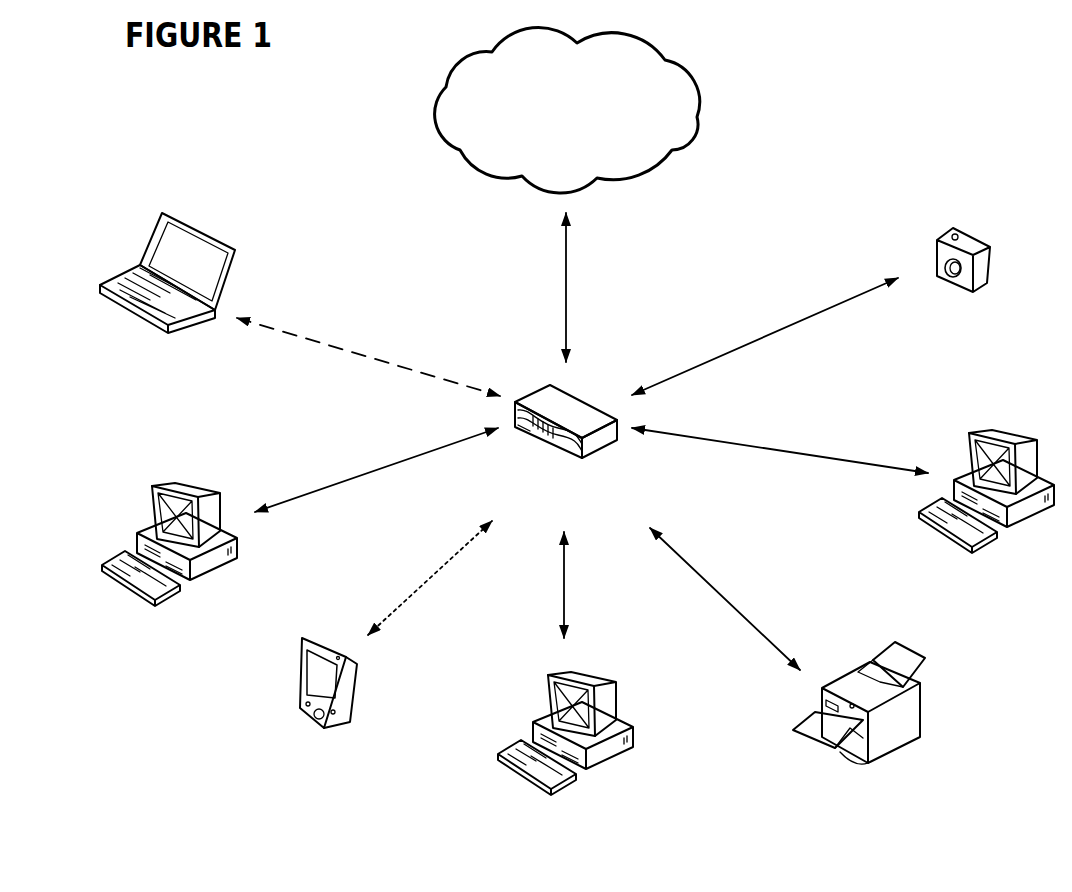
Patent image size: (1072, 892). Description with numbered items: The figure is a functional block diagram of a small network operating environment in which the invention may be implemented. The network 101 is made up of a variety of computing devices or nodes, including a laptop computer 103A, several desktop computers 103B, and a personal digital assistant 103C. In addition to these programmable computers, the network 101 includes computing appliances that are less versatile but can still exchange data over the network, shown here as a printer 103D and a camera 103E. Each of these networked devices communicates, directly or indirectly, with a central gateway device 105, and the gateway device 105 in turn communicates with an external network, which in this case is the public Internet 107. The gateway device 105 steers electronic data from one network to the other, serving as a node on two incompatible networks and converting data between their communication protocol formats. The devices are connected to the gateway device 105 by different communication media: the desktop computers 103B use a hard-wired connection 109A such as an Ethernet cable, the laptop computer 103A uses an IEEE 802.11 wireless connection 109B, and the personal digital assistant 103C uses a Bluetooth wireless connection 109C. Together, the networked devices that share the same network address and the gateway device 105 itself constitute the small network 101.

The network 101 is at (180, 707).
The laptop computer 103A is at (168, 309).
The desktop computer 103B is at (578, 651).
The personal digital assistant 103C is at (327, 710).
The printer 103D is at (858, 727).
The camera 103E is at (964, 300).
The gateway device 105 is at (565, 449).
The Internet 107 is at (567, 110).
The hard-wired connection 109A is at (333, 488).
The IEEE 802.11 wireless connection 109B is at (362, 352).
The Bluetooth wireless connection 109C is at (418, 592).